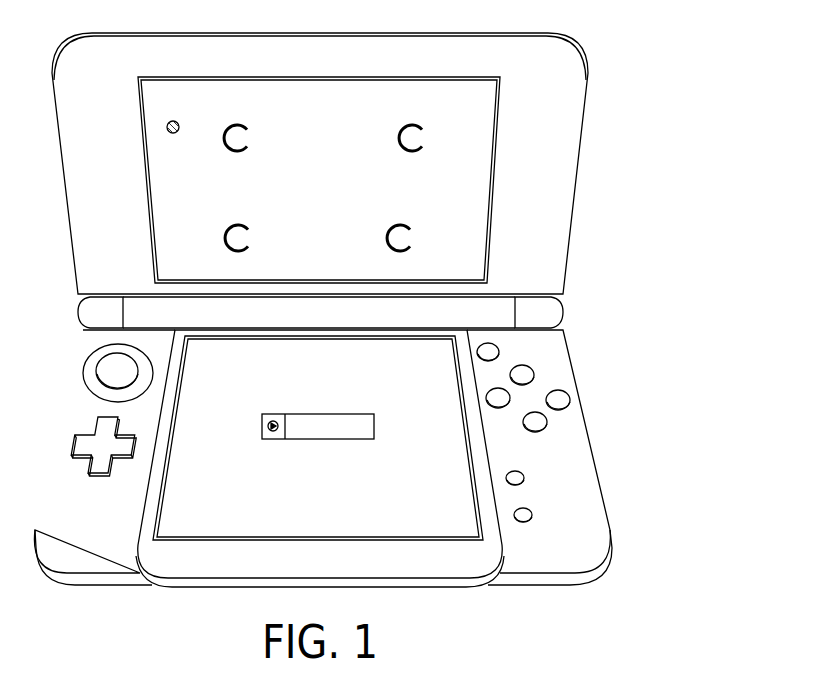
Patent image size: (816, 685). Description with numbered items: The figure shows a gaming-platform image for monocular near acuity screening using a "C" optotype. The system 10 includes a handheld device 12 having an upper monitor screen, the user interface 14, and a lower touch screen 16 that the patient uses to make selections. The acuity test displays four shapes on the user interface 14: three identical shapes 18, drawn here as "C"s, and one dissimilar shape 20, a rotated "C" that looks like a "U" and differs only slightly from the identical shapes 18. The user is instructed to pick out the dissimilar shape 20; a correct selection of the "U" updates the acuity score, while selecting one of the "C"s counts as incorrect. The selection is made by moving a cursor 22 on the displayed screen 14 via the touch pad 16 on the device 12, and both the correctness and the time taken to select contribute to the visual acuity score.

The system 10 is at (594, 44).
The device 12 is at (545, 120).
The user interface 14 is at (418, 180).
The touch screen 16 is at (443, 500).
The identical shapes 18 is at (398, 138).
The dissimilar shape 20 is at (250, 138).
The cursor 22 is at (172, 134).